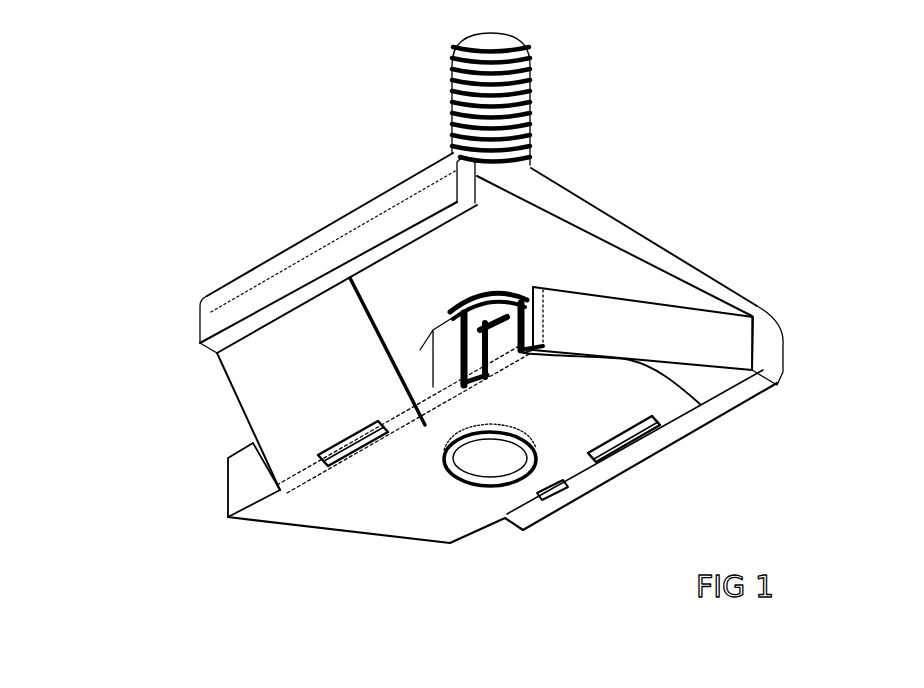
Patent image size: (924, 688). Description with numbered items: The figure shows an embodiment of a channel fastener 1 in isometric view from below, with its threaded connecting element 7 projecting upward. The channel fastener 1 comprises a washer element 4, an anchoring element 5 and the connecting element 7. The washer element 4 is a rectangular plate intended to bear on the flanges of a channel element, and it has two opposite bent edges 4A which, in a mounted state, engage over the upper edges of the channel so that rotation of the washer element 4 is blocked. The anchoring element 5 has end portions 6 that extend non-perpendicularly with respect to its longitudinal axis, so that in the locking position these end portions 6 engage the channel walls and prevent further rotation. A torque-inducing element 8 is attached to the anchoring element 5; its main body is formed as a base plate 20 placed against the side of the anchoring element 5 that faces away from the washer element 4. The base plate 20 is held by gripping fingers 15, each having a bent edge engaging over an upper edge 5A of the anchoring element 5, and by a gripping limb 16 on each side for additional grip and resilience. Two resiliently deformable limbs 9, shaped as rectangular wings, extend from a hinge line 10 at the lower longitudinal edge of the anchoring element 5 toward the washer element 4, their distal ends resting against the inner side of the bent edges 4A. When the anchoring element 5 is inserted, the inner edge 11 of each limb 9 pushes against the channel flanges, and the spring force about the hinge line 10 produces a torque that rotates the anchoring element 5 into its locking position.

The channel fastener 1 is at (802, 119).
The washer element 4 is at (647, 250).
The bent edges 4A is at (345, 218).
The anchoring element 5 is at (277, 518).
The upper edge 5A is at (290, 258).
The end portions 6 is at (673, 343).
The connecting element 7 is at (530, 84).
The torque-inducing element 8 is at (453, 520).
The limbs 9 is at (328, 393).
The hinge line 10 is at (233, 493).
The inner edge 11 is at (370, 310).
The gripping fingers 15 is at (445, 437).
The gripping limb 16 is at (503, 330).
The base plate 20 is at (567, 410).